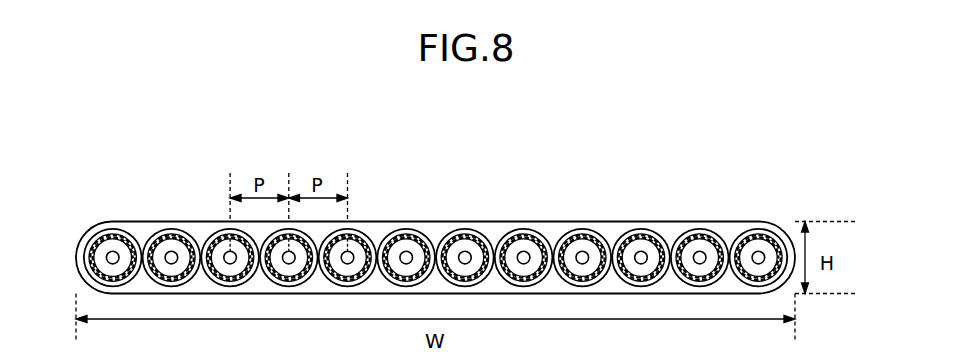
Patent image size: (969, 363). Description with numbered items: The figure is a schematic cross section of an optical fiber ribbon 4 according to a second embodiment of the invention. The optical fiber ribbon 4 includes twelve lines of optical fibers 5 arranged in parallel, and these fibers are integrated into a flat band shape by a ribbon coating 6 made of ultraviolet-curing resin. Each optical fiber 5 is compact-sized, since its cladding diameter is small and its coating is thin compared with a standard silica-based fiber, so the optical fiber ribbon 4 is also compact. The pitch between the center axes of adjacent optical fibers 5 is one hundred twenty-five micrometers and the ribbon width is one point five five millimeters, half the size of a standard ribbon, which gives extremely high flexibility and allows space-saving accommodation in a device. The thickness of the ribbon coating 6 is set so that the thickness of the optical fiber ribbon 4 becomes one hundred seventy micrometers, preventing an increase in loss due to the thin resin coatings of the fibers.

The optical fiber ribbon 4 is at (639, 162).
The optical fiber 5 is at (108, 220).
The ribbon coating 6 is at (145, 233).